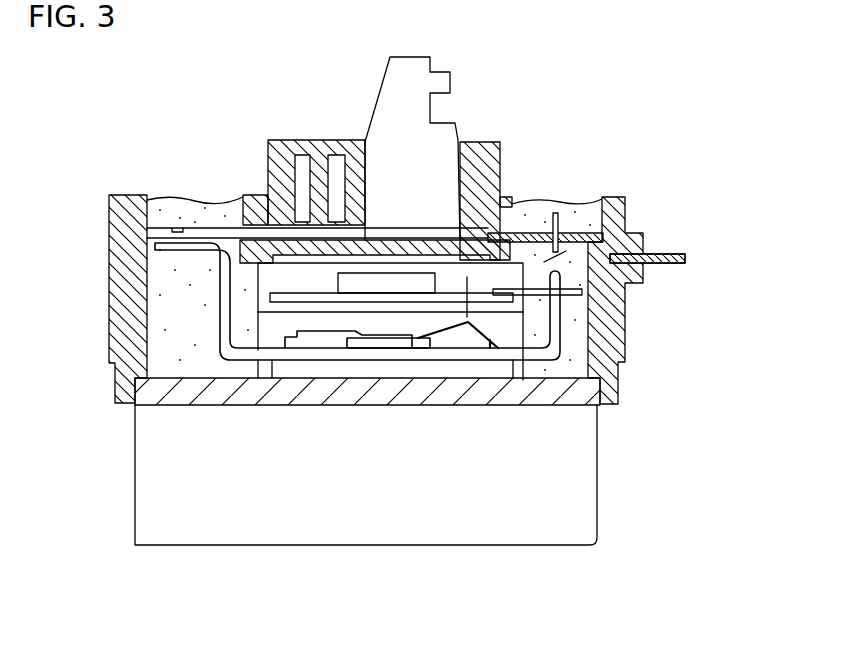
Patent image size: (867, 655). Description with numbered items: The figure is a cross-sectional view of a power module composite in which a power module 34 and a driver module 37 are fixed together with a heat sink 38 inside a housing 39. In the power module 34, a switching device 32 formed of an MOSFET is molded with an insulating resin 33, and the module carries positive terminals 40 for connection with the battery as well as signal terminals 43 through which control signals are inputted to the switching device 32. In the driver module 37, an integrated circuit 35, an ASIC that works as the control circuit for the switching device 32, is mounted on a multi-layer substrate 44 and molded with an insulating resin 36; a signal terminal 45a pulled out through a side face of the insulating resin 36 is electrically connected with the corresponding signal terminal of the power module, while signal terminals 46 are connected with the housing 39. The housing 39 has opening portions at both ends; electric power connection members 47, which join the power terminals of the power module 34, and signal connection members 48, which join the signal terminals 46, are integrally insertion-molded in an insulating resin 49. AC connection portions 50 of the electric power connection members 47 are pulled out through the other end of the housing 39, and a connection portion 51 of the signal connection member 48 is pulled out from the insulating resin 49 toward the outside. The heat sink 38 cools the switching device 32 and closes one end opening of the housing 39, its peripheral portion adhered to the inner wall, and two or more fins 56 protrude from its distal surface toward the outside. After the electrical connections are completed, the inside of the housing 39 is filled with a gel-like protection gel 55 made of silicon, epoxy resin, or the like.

The switching device 32 is at (393, 342).
The insulating resin 33 is at (282, 327).
The power module 34 is at (263, 322).
The integrated circuit 35 is at (398, 290).
The insulating resin 36 is at (467, 277).
The driver module 37 is at (262, 283).
The heat sink 38 is at (552, 405).
The housing 39 is at (627, 340).
The positive terminals 40 is at (228, 353).
The signal terminals 43 is at (567, 307).
The multi-layer substrate 44 is at (453, 298).
The signal terminal 45a is at (532, 282).
The signal terminals 46 is at (556, 213).
The electric power connection members 47 is at (168, 207).
The signal connection members 48 is at (655, 258).
The insulating resin 49 is at (292, 140).
The AC connection portions 50 is at (417, 82).
The connection portion 51 is at (688, 263).
The protection gel 55 is at (210, 197).
The fins 56 is at (555, 497).